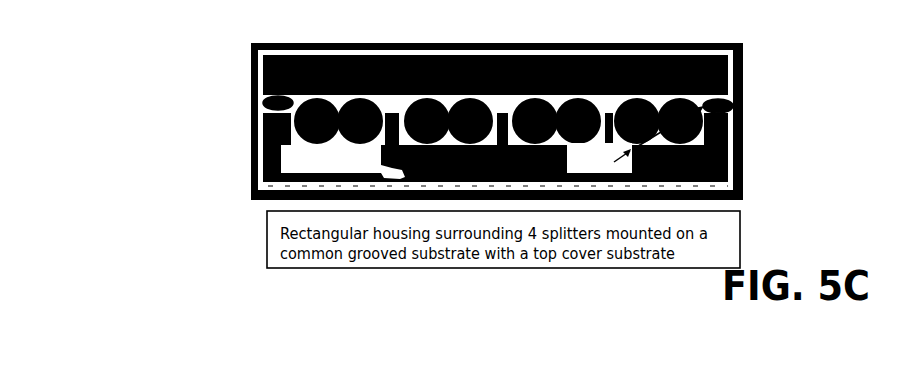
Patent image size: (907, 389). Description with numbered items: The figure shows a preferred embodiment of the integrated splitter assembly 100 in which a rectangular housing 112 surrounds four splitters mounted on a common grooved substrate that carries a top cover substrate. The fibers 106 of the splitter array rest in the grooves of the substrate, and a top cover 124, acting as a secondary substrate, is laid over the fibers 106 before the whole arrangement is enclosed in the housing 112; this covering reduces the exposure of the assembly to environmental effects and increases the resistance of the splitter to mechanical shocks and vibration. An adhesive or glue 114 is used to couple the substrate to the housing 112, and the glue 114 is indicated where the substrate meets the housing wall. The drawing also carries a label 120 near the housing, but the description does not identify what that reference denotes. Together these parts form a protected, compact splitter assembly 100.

The integrated splitter assembly 100 is at (472, 121).
The rectangular housing 120 is at (736, 17).
The top cover 124 is at (575, 62).
The housing 112 is at (742, 172).
The fibers 106 is at (263, 113).
The adhesive or glue 114 is at (747, 100).